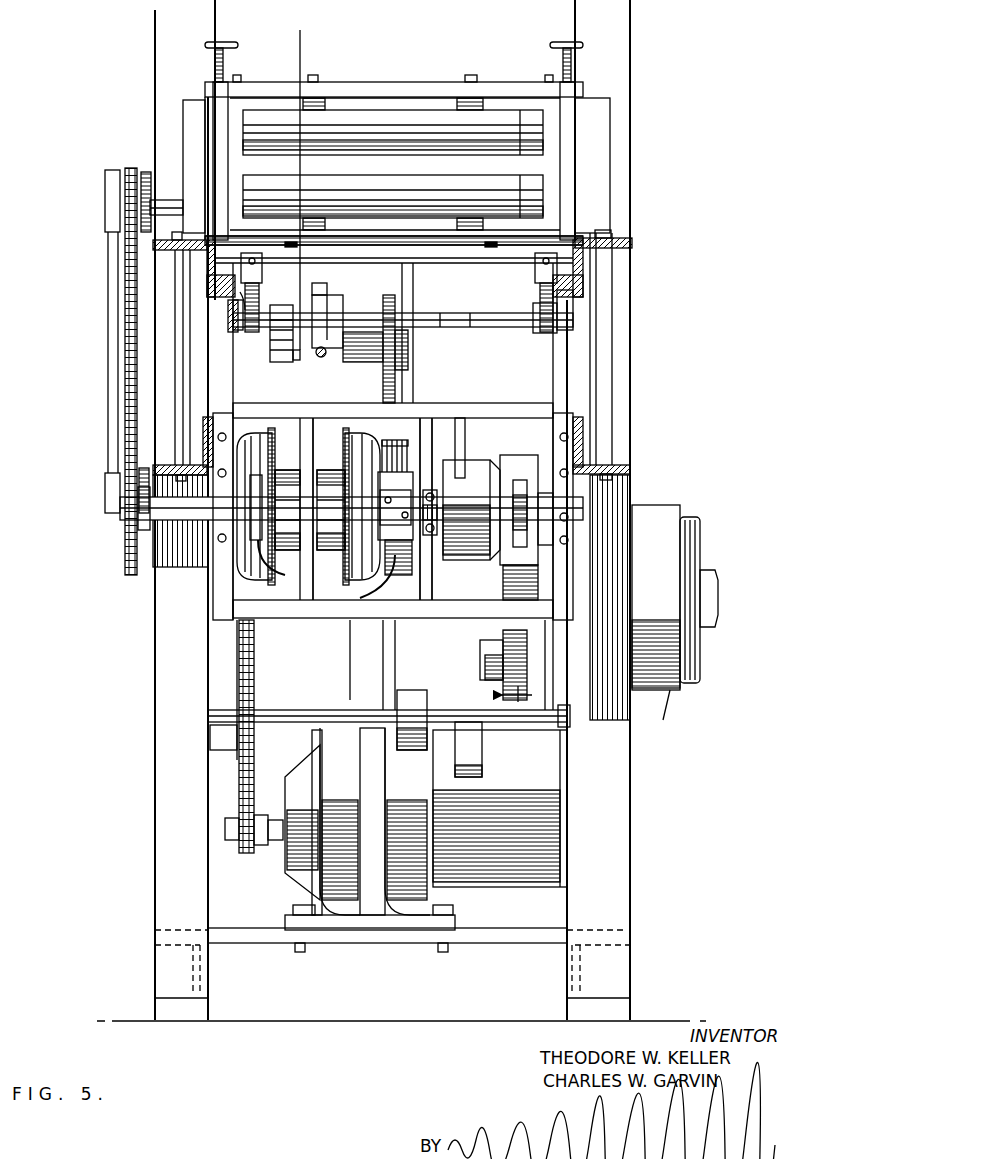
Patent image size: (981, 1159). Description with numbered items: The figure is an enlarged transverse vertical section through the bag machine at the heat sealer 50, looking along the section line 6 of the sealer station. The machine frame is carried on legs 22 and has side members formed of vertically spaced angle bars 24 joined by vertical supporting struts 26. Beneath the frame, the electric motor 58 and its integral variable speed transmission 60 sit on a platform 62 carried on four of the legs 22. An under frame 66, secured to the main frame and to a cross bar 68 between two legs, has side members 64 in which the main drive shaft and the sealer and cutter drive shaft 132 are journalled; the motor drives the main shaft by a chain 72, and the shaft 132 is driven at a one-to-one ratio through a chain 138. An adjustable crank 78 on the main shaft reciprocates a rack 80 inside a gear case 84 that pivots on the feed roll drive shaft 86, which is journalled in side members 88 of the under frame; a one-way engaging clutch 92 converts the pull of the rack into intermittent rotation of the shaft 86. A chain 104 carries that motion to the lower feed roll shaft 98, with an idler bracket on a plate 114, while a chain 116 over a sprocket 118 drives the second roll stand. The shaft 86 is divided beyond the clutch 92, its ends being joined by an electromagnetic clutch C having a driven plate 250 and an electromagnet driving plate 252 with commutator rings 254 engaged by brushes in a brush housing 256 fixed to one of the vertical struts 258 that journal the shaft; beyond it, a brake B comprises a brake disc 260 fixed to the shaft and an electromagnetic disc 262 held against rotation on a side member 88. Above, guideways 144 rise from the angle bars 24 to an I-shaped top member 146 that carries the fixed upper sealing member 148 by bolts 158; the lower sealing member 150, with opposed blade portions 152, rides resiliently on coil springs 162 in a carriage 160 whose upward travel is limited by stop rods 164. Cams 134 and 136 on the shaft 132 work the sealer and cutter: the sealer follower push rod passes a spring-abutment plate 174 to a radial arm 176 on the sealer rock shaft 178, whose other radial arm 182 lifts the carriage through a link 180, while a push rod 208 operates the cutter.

The section line 6 is at (284, 42).
The legs 22 is at (155, 845).
The angle bars 24 is at (163, 255).
The vertical supporting struts 26 is at (178, 368).
The heat sealer 50 is at (415, 73).
The electric motor 58 is at (650, 693).
The variable speed transmission 60 is at (497, 888).
The platform 62 is at (272, 945).
The side members 64 is at (400, 282).
The under frame 66 is at (363, 660).
The cross bar 68 is at (285, 712).
The chain 72 is at (258, 772).
The adjustable crank 78 is at (482, 757).
The rack 80 is at (527, 635).
The gear case 84 is at (505, 462).
The feed roll drive shaft 86 is at (168, 522).
The side members 88 is at (232, 372).
The one-way engaging clutch 92 is at (462, 462).
The shafts 98 is at (163, 200).
The chain 104 is at (125, 345).
The plate 114 is at (108, 295).
The chain 116 is at (142, 272).
The sprocket 118 is at (146, 172).
The sealer and cutter drive shaft 132 is at (379, 308).
The cam 134 is at (258, 266).
The cam 136 is at (320, 290).
The chain 138 is at (383, 395).
The guideways 144 is at (205, 130).
The top member 146 is at (503, 80).
The upper sealing member 148 is at (528, 164).
The lower sealing member 150 is at (445, 185).
The blade portions 152 is at (305, 150).
The bolts 158 is at (315, 75).
The carriage 160 is at (437, 264).
The coil springs 162 is at (290, 248).
The stop rods 164 is at (226, 62).
The spring-abutment plate 174 is at (342, 386).
The radial arm 176 is at (293, 366).
The sealer rock shaft 178 is at (470, 332).
The link 180 is at (247, 293).
The radial arm 182 is at (250, 336).
The push rod 208 is at (322, 358).
The driven plate 250 is at (345, 580).
The driving plate 252 is at (345, 392).
The commutator rings 254 is at (410, 445).
The brush housing 256 is at (400, 605).
The vertical struts 258 is at (315, 600).
The brake disc 260 is at (270, 433).
The electromagnetic disc 262 is at (268, 590).
The brake B is at (233, 577).
The electromagnetic clutch C is at (390, 592).